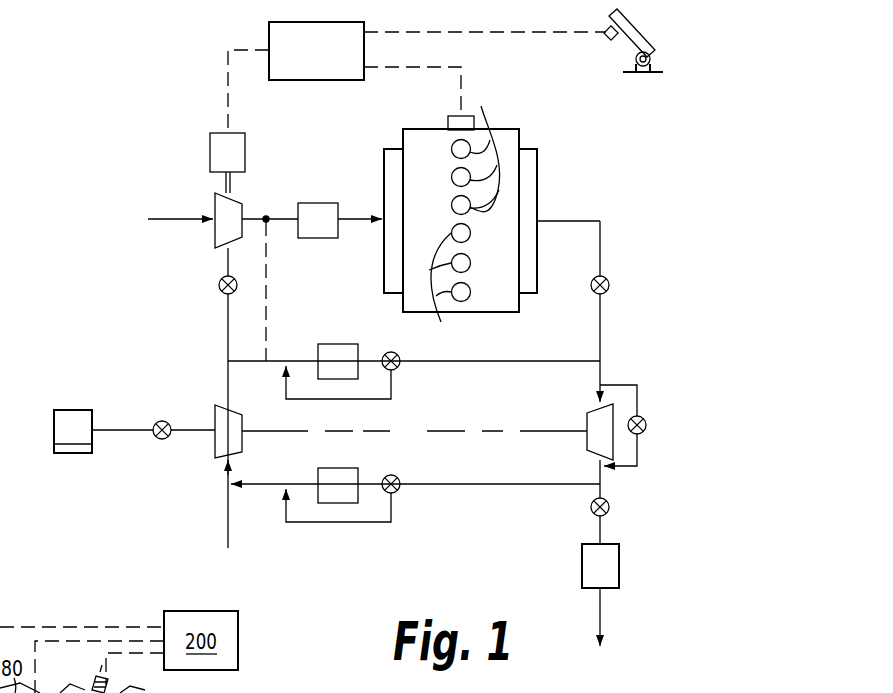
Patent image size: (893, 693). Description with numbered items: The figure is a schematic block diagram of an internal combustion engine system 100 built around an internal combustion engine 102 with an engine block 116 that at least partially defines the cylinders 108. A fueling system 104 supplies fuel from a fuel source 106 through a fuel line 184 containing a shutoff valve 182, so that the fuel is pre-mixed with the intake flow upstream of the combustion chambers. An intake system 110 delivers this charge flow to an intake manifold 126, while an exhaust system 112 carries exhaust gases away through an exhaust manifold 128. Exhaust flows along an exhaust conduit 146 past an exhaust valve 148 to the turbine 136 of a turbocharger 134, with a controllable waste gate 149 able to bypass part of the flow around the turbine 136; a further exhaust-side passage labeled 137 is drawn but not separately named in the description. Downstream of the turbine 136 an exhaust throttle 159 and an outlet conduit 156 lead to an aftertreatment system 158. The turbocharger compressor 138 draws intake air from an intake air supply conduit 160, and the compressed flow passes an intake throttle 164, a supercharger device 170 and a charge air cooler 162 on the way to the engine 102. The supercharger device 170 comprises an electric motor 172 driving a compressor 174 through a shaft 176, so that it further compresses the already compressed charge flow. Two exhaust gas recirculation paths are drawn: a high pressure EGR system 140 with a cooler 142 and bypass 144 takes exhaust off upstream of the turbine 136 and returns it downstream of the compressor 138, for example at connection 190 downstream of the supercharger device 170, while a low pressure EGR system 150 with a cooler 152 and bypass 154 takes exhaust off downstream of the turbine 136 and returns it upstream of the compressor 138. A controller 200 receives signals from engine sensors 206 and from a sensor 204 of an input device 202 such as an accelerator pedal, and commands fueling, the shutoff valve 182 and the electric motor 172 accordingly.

The internal combustion engine system 100 is at (660, 166).
The internal combustion engine 102 is at (510, 126).
The fueling system 104 is at (68, 456).
The fuel source 106 is at (73, 431).
The cylinders 108 is at (460, 214).
The intake system 110 is at (224, 320).
The exhaust system 112 is at (605, 262).
The engine block 116 is at (508, 170).
The intake manifold 126 is at (388, 170).
The exhaust manifold 128 is at (528, 192).
The turbocharger 134 is at (400, 425).
The turbine 136 is at (587, 412).
The exhaust conduit 137 is at (428, 433).
The compressor 138 is at (214, 403).
The high pressure exhaust gas recirculation system 140 is at (468, 366).
The cooler 142 is at (336, 344).
The bypass 144 is at (287, 400).
The exhaust conduit 146 is at (602, 238).
The exhaust valve 148 is at (591, 288).
The controllable waste gate 149 is at (646, 418).
The low pressure exhaust gas recirculation system 150 is at (433, 489).
The cooler 152 is at (318, 472).
The bypass 154 is at (317, 523).
The outlet conduit 156 is at (599, 531).
The aftertreatment system 158 is at (620, 567).
The exhaust throttle 159 is at (612, 507).
The intake air supply conduit 160 is at (226, 505).
The charge air cooler 162 is at (316, 203).
The intake throttle 164 is at (219, 285).
The supercharger device 170 is at (162, 222).
The electric motor 172 is at (210, 145).
The compressor 174 is at (212, 238).
The shaft 176 is at (232, 186).
The shutoff valve 182 is at (160, 440).
The fuel line 184 is at (113, 428).
The connection 190 is at (268, 222).
The controller 200 is at (333, 63).
The input device 202 is at (648, 26).
The sensor 204 is at (608, 29).
The engine sensors 206 is at (448, 120).